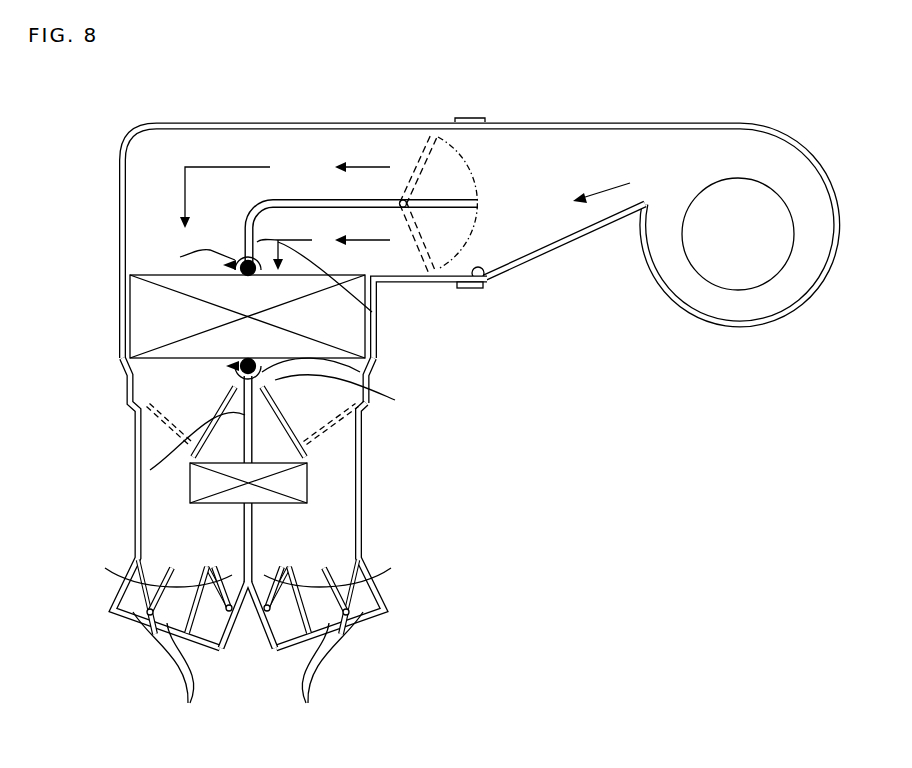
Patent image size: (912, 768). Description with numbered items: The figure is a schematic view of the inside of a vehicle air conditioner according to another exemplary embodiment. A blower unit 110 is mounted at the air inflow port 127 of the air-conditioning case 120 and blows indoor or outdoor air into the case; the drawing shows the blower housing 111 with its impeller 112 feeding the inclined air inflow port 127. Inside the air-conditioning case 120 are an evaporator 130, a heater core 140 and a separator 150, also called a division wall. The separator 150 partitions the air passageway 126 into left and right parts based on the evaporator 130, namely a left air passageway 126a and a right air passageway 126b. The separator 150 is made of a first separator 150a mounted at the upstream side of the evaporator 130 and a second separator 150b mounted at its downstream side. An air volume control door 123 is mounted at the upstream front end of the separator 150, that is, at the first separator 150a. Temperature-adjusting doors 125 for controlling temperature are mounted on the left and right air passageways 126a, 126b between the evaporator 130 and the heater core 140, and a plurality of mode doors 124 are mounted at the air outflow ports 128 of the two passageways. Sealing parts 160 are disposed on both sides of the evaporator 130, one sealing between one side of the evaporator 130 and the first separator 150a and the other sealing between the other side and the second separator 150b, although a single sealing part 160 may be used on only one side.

The blower unit 110 is at (793, 318).
The blower housing 111 is at (695, 122).
The impeller 112 is at (738, 291).
The air-conditioning case 120 is at (372, 440).
The air volume control door 123 is at (443, 197).
The mode doors 124 is at (132, 578).
The temperature-adjusting doors 125 is at (212, 426).
The air passageway 126 is at (349, 457).
The left air passageway 126a is at (250, 556).
The right air passageway 126b is at (337, 493).
The air inflow port 127 is at (488, 280).
The air outflow ports 128 is at (248, 648).
The evaporator 130 is at (148, 322).
The heater core 140 is at (190, 466).
The separator 150 is at (437, 341).
The first separator 150a is at (377, 318).
The second separator 150b is at (377, 356).
The sealing part 160 is at (223, 264).